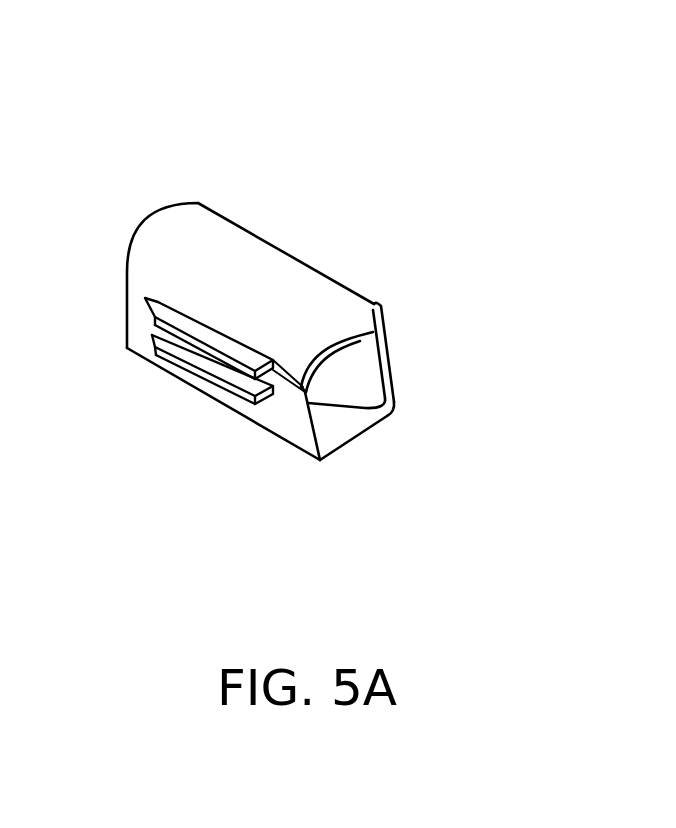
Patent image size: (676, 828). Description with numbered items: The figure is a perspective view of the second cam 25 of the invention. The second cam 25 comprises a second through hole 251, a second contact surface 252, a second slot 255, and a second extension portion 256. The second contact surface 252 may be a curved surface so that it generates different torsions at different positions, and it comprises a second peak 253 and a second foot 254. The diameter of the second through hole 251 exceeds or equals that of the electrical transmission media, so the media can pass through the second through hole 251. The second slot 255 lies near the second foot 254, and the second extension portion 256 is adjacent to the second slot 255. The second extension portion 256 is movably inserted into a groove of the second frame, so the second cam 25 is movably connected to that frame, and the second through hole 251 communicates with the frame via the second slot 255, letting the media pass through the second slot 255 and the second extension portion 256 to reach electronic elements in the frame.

The second cam 25 is at (82, 82).
The second through hole 251 is at (353, 385).
The second contact surface 252 is at (383, 336).
The second peak 253 is at (362, 337).
The second foot 254 is at (393, 342).
The second slot 255 is at (297, 393).
The second extension portion 256 is at (182, 355).